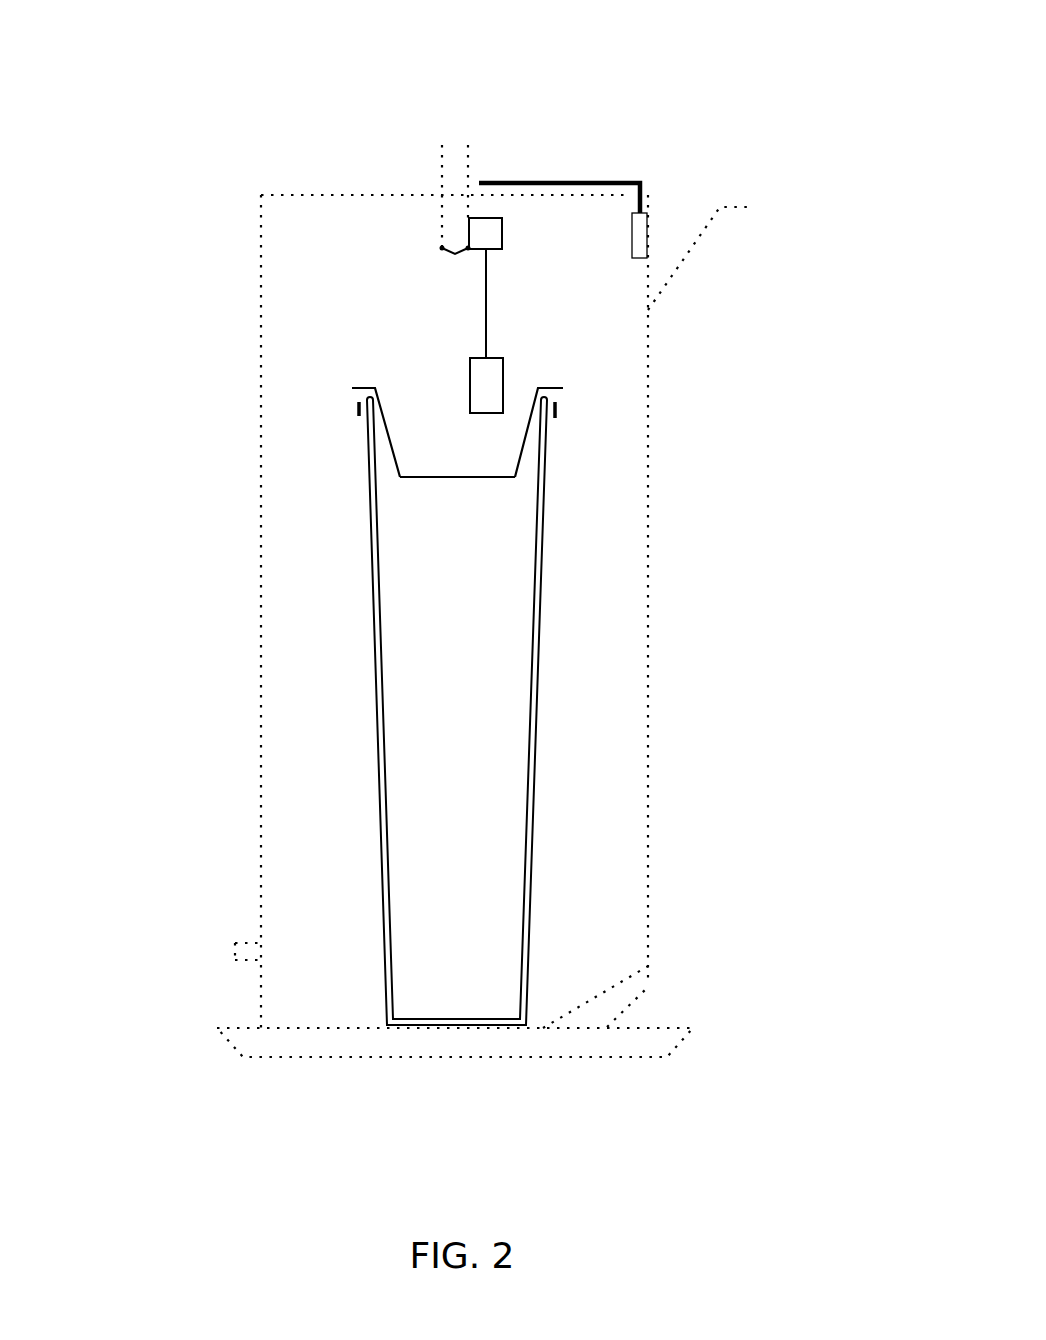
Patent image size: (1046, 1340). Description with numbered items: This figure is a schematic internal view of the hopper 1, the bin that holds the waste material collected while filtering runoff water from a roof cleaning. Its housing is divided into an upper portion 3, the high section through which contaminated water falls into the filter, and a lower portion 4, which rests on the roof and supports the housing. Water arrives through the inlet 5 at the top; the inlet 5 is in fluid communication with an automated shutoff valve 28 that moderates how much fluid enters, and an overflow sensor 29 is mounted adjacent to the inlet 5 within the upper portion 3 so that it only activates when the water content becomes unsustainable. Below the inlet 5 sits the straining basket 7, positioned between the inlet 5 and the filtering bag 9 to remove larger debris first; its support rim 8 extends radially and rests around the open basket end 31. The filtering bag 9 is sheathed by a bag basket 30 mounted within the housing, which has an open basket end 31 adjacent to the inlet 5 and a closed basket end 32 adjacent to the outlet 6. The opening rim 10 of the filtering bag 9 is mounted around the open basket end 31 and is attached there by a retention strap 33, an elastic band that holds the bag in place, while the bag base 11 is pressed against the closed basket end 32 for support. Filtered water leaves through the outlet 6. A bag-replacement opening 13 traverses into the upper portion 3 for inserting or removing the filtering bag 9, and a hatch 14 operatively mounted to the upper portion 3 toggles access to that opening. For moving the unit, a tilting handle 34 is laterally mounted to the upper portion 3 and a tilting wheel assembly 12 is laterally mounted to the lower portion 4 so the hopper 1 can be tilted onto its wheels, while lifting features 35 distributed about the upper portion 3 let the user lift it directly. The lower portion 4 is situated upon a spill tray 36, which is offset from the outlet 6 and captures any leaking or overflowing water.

The hopper 1 is at (262, 65).
The upper portion 3 is at (275, 233).
The lower portion 4 is at (270, 990).
The inlet 5 is at (462, 135).
The outlet 6 is at (218, 945).
The straining basket 7 is at (420, 477).
The support rim 8 is at (563, 388).
The filtering bag 9 is at (530, 743).
The opening rim 10 is at (362, 398).
The bag base 11 is at (455, 1019).
The tilting wheel assembly 12 is at (623, 990).
The bag-replacement opening 13 is at (398, 377).
The hatch 14 is at (565, 183).
The automated shutoff valve 28 is at (442, 248).
The overflow sensor 29 is at (497, 388).
The bag basket 30 is at (533, 772).
The open basket end 31 is at (527, 485).
The closed basket end 32 is at (512, 947).
The retention strap 33 is at (359, 415).
The tilting handle 34 is at (735, 207).
The lifting features 35 is at (259, 213).
The spill tray 36 is at (455, 1048).